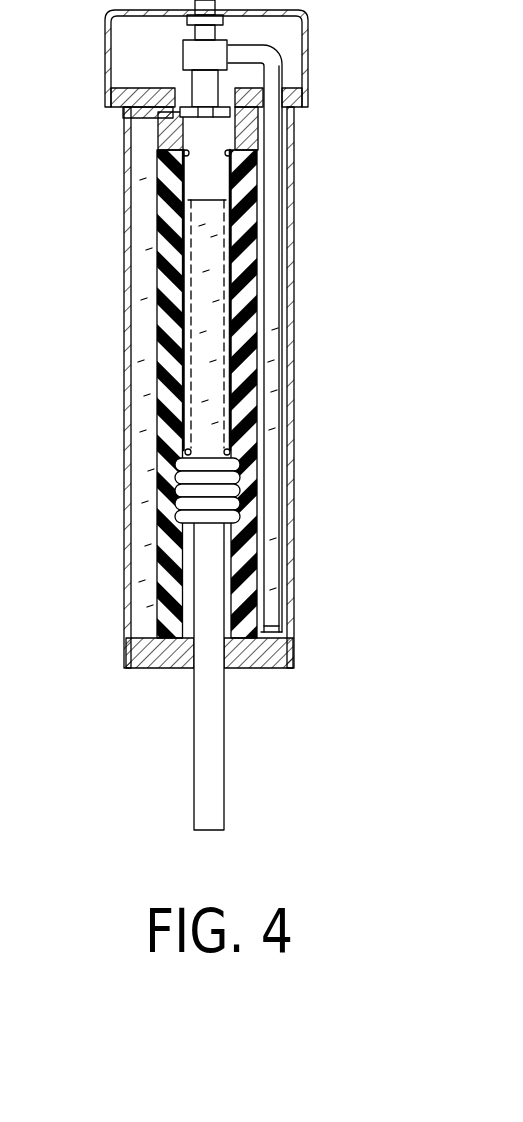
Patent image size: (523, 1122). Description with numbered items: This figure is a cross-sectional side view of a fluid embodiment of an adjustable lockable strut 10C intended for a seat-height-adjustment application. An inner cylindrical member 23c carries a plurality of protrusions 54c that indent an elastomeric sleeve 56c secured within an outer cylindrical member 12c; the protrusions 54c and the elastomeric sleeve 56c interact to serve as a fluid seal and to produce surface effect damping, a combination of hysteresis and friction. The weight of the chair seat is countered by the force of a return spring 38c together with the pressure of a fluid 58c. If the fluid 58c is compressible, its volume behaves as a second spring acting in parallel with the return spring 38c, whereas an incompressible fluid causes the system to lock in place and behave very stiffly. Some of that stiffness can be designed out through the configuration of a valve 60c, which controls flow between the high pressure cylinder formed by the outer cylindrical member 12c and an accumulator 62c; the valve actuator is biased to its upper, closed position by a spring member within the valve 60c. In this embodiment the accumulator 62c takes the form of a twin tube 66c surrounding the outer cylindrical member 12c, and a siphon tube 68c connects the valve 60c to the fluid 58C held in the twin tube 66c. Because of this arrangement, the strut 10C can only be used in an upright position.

The adjustable lockable strut 10C is at (322, 412).
The outer cylindrical member 12c is at (264, 300).
The inner cylindrical member 23c is at (176, 711).
The return spring 38c is at (243, 212).
The protrusions 54c is at (177, 516).
The elastomeric sleeve 56c is at (243, 262).
The fluid 58c is at (207, 302).
The fluid 58C is at (272, 368).
The valve 60c is at (251, 71).
The accumulator 62c is at (113, 389).
The twin tube 66c is at (124, 217).
The siphon tube 68c is at (268, 156).